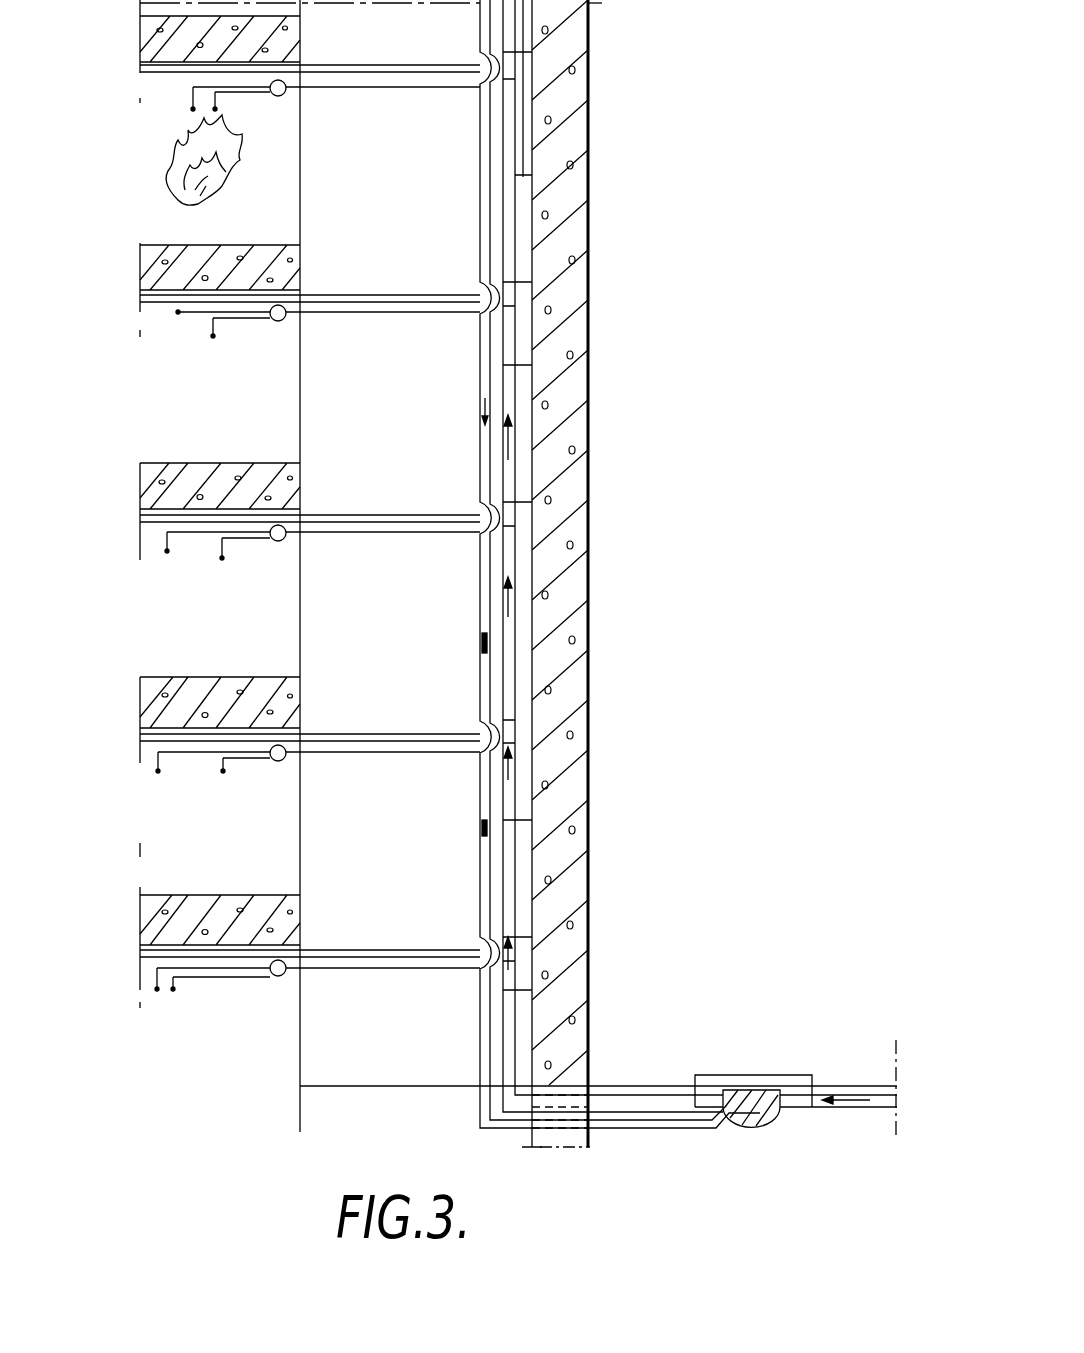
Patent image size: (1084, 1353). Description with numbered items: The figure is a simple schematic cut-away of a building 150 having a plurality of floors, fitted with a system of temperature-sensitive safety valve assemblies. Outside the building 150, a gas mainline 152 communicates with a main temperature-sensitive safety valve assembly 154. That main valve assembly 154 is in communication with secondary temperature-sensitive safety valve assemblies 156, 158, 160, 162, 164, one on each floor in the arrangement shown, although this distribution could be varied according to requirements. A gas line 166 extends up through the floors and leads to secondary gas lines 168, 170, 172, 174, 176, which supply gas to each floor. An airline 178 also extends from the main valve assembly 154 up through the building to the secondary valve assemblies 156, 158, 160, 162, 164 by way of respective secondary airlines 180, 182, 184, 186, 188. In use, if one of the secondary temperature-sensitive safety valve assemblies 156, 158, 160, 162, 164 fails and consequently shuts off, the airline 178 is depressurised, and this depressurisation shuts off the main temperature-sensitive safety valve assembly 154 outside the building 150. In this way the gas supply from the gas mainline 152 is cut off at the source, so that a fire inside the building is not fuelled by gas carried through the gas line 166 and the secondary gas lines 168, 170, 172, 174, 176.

The building 150 is at (600, 395).
The gas mainline 152 is at (834, 1090).
The main temperature-sensitive safety valve assembly 154 is at (747, 1066).
The secondary safety valve assembly 156 is at (269, 993).
The secondary safety valve assembly 158 is at (272, 780).
The secondary safety valve assembly 160 is at (279, 556).
The secondary safety valve assembly 162 is at (275, 331).
The secondary safety valve assembly 164 is at (279, 112).
The gas line 166 is at (515, 174).
The secondary gas line 168 is at (374, 948).
The secondary gas line 170 is at (375, 732).
The secondary gas line 172 is at (377, 512).
The secondary gas line 174 is at (377, 293).
The secondary gas line 176 is at (418, 63).
The airline 178 is at (490, 263).
The secondary airline 180 is at (397, 972).
The secondary airline 182 is at (378, 756).
The secondary airline 184 is at (378, 538).
The secondary airline 186 is at (378, 318).
The secondary airline 188 is at (360, 92).